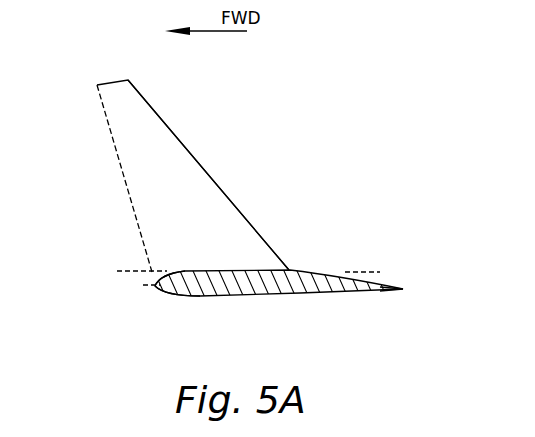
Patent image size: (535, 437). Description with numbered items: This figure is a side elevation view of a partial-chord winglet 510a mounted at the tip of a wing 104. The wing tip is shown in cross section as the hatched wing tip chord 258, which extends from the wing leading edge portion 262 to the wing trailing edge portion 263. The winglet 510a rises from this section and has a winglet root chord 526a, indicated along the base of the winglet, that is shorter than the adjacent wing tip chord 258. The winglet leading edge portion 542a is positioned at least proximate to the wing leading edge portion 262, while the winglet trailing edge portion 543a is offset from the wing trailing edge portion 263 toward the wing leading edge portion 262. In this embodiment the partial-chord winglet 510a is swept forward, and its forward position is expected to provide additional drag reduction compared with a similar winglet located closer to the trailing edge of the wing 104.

The partial-chord winglet 510a is at (162, 113).
The winglet leading edge portion 542a is at (124, 178).
The winglet trailing edge portion 543a is at (226, 190).
The winglet root chord 526a is at (133, 268).
The wing tip chord 258 is at (200, 287).
The wing leading edge portion 262 is at (160, 288).
The wing trailing edge portion 263 is at (403, 293).
The wing 104 is at (385, 283).